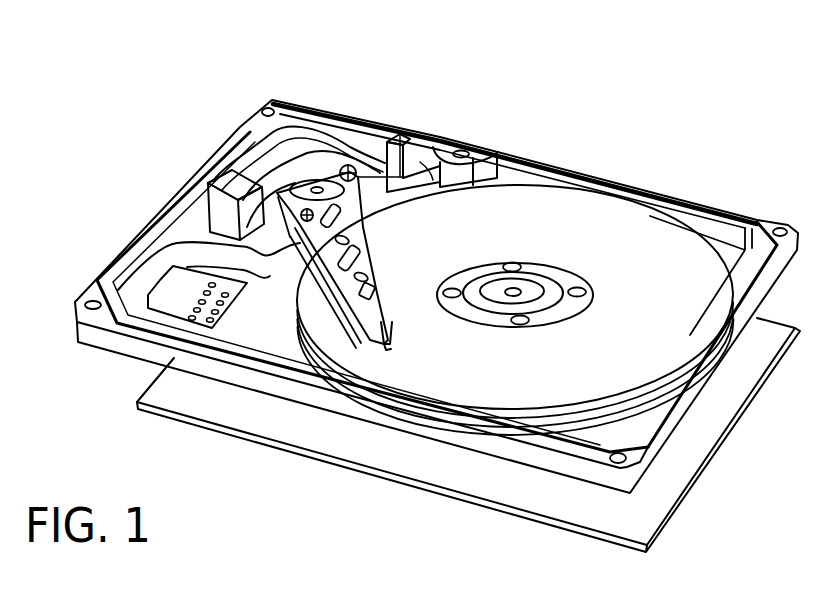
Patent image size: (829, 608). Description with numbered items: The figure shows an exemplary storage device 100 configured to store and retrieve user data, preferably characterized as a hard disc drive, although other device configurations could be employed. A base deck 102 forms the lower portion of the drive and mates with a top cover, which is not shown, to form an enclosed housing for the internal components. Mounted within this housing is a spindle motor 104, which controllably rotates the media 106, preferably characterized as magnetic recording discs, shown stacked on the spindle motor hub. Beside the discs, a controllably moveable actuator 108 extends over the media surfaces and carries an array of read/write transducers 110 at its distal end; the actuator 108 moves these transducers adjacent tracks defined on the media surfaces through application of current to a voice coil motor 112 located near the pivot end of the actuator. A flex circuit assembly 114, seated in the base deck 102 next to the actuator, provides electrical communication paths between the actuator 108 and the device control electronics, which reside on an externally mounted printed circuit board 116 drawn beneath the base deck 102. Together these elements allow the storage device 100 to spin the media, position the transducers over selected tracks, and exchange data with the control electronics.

The storage device 100 is at (113, 101).
The base deck 102 is at (700, 388).
The spindle motor 104 is at (527, 287).
The media 106 is at (540, 411).
The actuator 108 is at (372, 272).
The read/write transducers 110 is at (395, 335).
The voice coil motor 112 is at (301, 148).
The flex circuit assembly 114 is at (205, 250).
The printed circuit board 116 is at (608, 542).